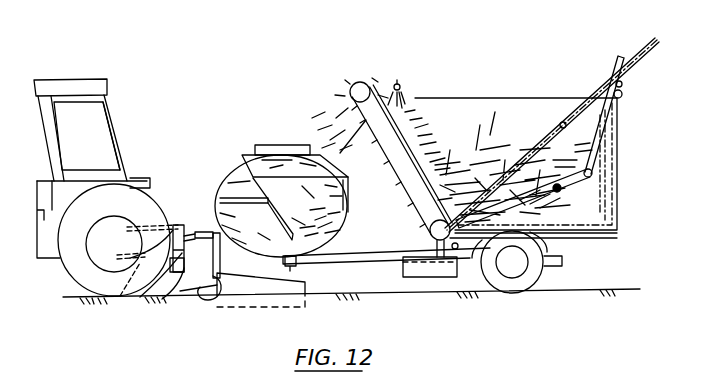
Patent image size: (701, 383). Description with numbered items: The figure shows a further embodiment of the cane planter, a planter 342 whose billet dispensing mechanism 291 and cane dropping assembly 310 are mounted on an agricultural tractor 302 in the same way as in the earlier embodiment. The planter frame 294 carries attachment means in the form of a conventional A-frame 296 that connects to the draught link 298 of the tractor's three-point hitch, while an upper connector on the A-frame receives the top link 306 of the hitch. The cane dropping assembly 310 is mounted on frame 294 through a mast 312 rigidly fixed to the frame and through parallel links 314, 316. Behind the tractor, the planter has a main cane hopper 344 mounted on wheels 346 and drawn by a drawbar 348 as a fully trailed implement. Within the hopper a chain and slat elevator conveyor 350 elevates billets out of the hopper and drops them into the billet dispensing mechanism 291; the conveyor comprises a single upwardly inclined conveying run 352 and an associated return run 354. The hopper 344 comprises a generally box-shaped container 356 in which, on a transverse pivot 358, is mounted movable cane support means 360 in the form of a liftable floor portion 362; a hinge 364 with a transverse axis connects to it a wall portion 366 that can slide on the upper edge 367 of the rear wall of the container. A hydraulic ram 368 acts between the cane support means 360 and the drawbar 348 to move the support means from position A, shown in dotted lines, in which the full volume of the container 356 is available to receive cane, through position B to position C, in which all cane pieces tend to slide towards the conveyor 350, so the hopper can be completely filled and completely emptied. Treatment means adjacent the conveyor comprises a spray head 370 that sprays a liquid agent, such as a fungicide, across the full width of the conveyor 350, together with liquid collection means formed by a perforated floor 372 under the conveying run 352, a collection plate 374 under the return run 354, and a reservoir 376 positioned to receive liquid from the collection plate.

The agricultural tractor 302 is at (118, 104).
The planter 342 is at (268, 85).
The billet dispensing mechanism 291 is at (222, 160).
The top link 306 is at (174, 225).
The A-frame 296 is at (197, 233).
The parallel link 316 is at (197, 232).
The draught link 298 is at (117, 300).
The mast 312 is at (140, 297).
The frame 294 is at (164, 300).
The cane dropping assembly 310 is at (198, 302).
The parallel link 314 is at (230, 298).
The collection plate 374 is at (340, 135).
The drawbar 348 is at (348, 266).
The reservoir 376 is at (428, 280).
The wheels 346 is at (533, 286).
The main cane hopper 344 is at (597, 238).
The hydraulic ram 368 is at (548, 268).
The return run 354 is at (455, 142).
The chain and slat elevator conveyor 350 is at (360, 80).
The spray head 370 is at (399, 80).
The conveying run 352 is at (418, 108).
The perforated floor 372 is at (418, 130).
The transverse pivot 358 is at (458, 205).
The wall portion 366 is at (613, 77).
The upper edge 367 is at (622, 97).
The hinge 364 is at (593, 172).
The liftable floor portion 362 is at (523, 198).
The container 356 is at (612, 190).
The cane support means 360 is at (571, 238).
The position A is at (612, 210).
The position B is at (620, 57).
The position C is at (655, 38).